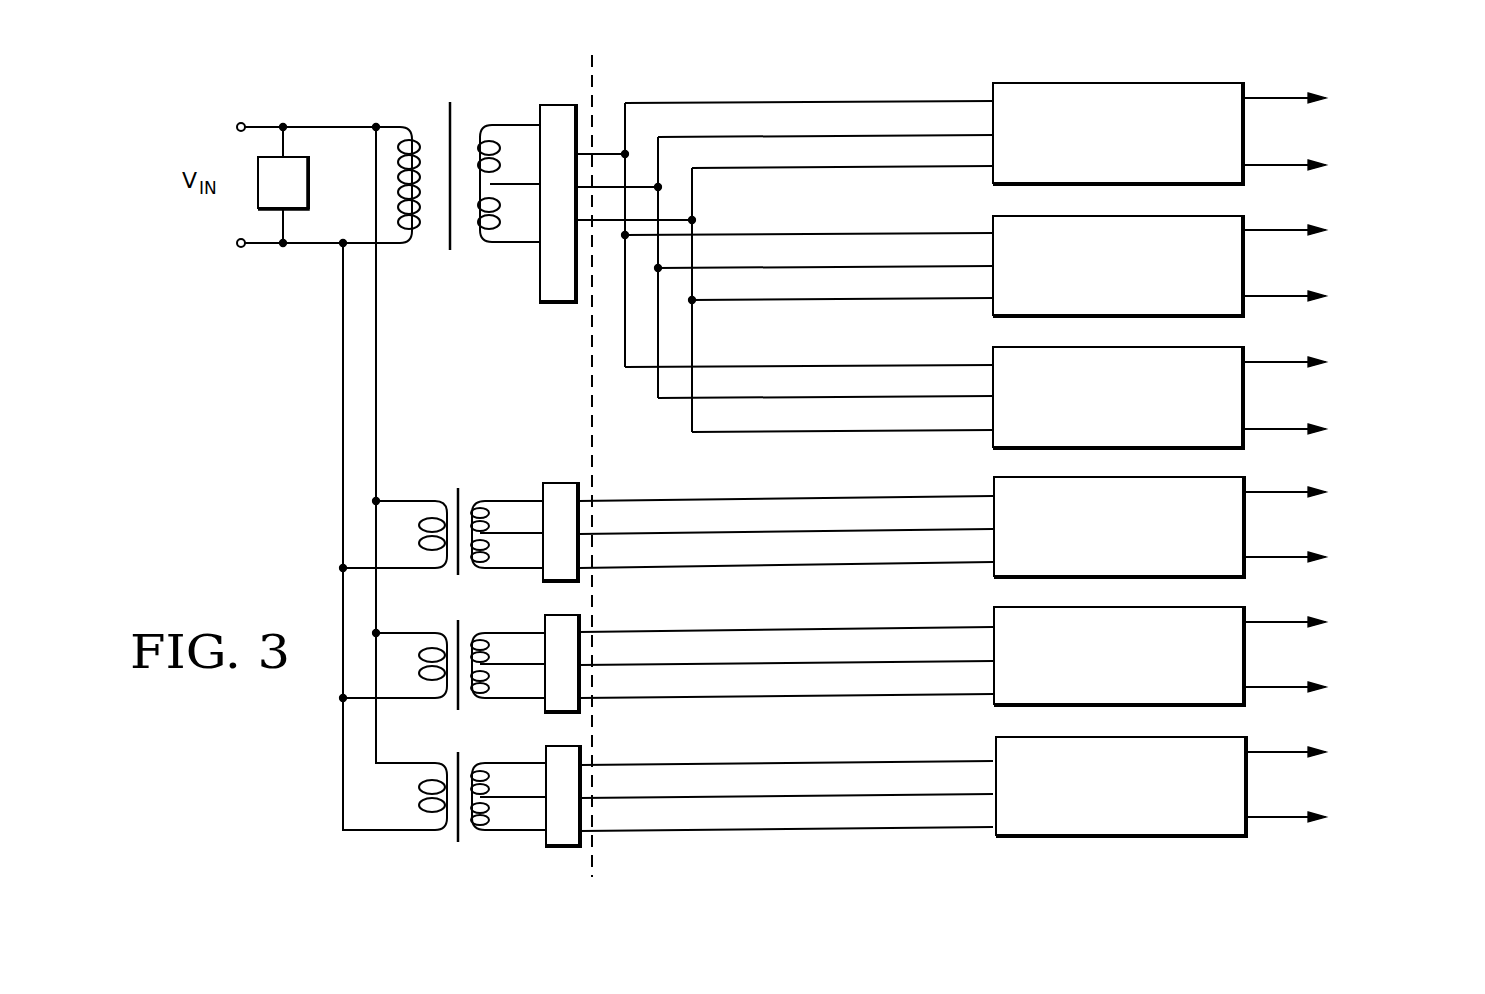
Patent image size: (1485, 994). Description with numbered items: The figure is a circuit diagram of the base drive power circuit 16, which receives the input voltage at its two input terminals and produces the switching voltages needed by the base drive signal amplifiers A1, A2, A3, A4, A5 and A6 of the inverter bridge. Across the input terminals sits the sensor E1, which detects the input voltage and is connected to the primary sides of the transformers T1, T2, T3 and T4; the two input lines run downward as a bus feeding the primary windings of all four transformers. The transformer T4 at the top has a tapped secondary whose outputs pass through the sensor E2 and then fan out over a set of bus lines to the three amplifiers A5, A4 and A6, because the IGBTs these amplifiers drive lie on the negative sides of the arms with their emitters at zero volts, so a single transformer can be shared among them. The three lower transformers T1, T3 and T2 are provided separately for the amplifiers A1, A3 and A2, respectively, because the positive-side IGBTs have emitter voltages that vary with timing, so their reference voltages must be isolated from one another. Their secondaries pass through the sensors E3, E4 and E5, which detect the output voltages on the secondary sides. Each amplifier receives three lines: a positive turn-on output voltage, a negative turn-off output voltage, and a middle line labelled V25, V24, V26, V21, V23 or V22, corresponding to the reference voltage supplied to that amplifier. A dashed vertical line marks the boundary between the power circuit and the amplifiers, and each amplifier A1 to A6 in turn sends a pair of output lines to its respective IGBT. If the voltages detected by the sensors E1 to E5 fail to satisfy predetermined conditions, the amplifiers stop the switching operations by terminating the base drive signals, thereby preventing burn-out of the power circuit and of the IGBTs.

The base drive power circuit 16 is at (590, 83).
The sensor E1 is at (295, 190).
The sensor E2 is at (560, 303).
The sensor E3 is at (565, 483).
The sensor E4 is at (562, 615).
The sensor E5 is at (562, 746).
The transformer T1 is at (443, 547).
The transformer T2 is at (482, 811).
The transformer T3 is at (444, 680).
The transformer T4 is at (469, 194).
The base drive signal amplifier A1 is at (1218, 477).
The base drive signal amplifier A2 is at (1215, 737).
The base drive signal amplifier A3 is at (1208, 607).
The base drive signal amplifier A4 is at (1213, 216).
The base drive signal amplifier A5 is at (1197, 83).
The base drive signal amplifier A6 is at (1225, 347).
The common/return line to amplifier A1 V21 is at (784, 531).
The common/return line to amplifier A2 V22 is at (786, 796).
The common/return line to amplifier A3 V23 is at (786, 663).
The common/return line to amplifier A4 V24 is at (837, 267).
The common/return line to amplifier A5 V25 is at (782, 136).
The common/return line to amplifier A6 V26 is at (817, 397).